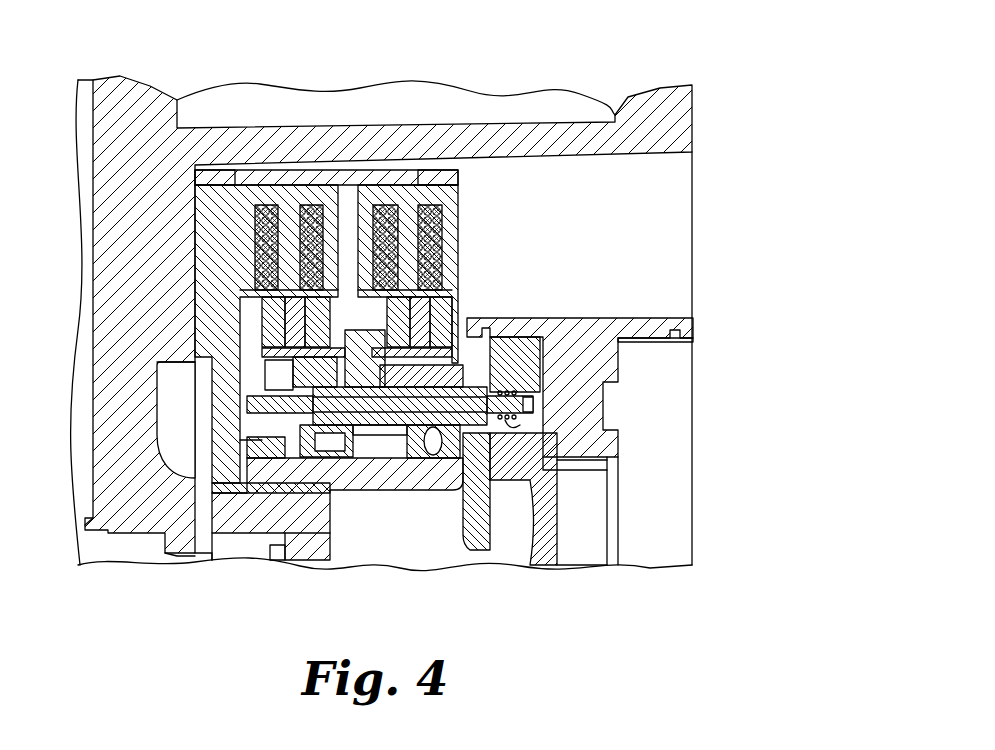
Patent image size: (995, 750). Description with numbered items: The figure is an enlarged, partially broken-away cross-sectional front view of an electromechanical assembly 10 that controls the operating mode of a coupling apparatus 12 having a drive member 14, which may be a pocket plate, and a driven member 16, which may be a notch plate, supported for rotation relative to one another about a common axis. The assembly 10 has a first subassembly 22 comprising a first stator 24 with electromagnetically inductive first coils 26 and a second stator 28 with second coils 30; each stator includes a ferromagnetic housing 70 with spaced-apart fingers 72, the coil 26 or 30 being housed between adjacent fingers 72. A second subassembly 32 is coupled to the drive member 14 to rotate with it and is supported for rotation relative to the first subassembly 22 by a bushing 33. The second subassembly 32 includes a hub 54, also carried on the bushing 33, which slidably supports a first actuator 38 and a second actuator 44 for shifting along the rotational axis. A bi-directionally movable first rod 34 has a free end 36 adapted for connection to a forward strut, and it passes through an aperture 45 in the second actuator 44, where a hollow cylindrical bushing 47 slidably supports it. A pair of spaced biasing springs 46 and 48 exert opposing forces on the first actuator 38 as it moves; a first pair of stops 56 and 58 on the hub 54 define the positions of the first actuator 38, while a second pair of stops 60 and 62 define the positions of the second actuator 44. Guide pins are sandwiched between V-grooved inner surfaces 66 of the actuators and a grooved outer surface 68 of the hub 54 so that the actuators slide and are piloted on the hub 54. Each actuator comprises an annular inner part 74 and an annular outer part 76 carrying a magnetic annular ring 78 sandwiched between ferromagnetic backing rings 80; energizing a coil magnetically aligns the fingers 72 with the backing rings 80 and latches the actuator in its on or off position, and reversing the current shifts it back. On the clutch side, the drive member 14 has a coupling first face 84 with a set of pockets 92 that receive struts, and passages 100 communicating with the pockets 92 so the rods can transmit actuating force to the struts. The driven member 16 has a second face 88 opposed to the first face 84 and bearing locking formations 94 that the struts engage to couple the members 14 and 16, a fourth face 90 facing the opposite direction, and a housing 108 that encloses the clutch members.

The electromechanical assembly 10 is at (428, 62).
The coupling apparatus 12 is at (710, 312).
The drive member 14 is at (603, 315).
The driven member 16 is at (600, 318).
The first subassembly 22 is at (282, 165).
The first stator 24 is at (295, 182).
The first coil 26 is at (257, 237).
The second stator 28 is at (430, 180).
The second coil 30 is at (460, 223).
The second subassembly 32 is at (157, 432).
The bushing 33 is at (217, 560).
The first rod 34 is at (366, 430).
The free end 36 is at (530, 497).
The first actuator 38 is at (158, 364).
The second actuator 44 is at (432, 258).
The aperture 45 is at (423, 428).
The biasing spring 46 is at (260, 440).
The hollow cylindrical bushing 47 is at (362, 432).
The biasing spring 48 is at (542, 390).
The hub 54 is at (327, 460).
The stop 56 is at (212, 491).
The stop 58 is at (280, 558).
The stop 60 is at (382, 430).
The stop 62 is at (467, 500).
The inner surfaces 66 is at (315, 388).
The outer surface 68 is at (207, 556).
The ferromagnetic housing 70 is at (235, 178).
The fingers 72 is at (403, 220).
The annular inner part 74 is at (263, 364).
The annular outer part 76 is at (255, 328).
The magnetic annular ring 78 is at (258, 317).
The ferromagnetic backing rings 80 is at (256, 366).
The coupling first face 84 is at (562, 568).
The coupling second face 88 is at (532, 408).
The coupling fourth face 90 is at (622, 373).
The pockets 92 is at (528, 420).
The locking formations 94 is at (565, 375).
The passages 100 is at (525, 430).
The housing 108 is at (609, 330).